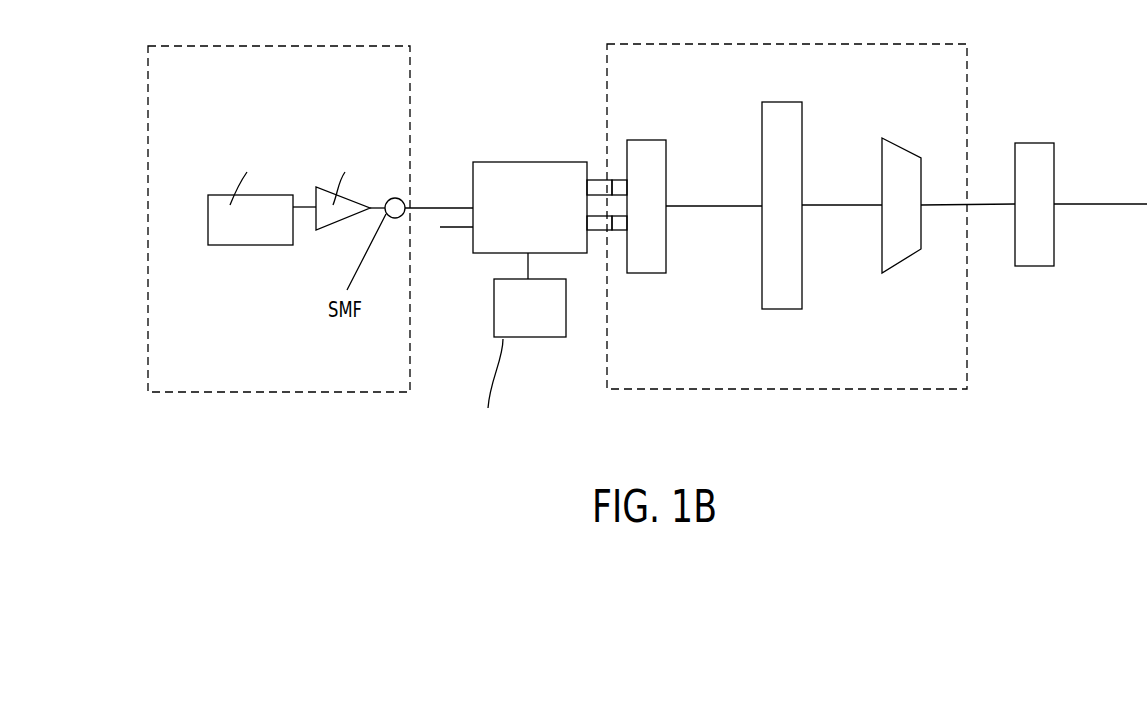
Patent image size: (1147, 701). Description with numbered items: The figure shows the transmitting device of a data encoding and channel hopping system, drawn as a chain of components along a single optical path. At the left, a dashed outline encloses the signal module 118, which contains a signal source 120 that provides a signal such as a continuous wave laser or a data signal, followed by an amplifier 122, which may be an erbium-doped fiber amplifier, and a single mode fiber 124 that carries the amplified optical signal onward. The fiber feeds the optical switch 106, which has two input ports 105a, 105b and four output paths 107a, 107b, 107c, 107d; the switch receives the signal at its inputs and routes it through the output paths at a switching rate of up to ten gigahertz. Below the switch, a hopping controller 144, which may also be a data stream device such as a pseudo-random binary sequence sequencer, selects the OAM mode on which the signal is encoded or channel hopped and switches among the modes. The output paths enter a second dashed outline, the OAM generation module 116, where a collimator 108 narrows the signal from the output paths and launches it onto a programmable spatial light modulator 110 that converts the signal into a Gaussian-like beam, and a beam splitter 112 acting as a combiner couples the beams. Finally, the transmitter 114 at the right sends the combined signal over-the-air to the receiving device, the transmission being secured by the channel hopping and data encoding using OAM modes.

The input port 105a is at (432, 207).
The input port 105b is at (455, 232).
The optical switch 106 is at (528, 160).
The output path 107a is at (600, 180).
The output path 107b is at (612, 180).
The output path 107c is at (590, 230).
The output path 107d is at (613, 230).
The collimator 108 is at (647, 138).
The programmable spatial light modulator 110 is at (803, 112).
The beam splitter 112 is at (907, 257).
The transmitter 114 is at (1033, 140).
The OAM generation module 116 is at (783, 390).
The signal module 118 is at (281, 392).
The signal source 120 is at (250, 247).
The amplifier 122 is at (340, 220).
The single mode fiber 124 is at (397, 219).
The hopping controller 144 is at (530, 338).